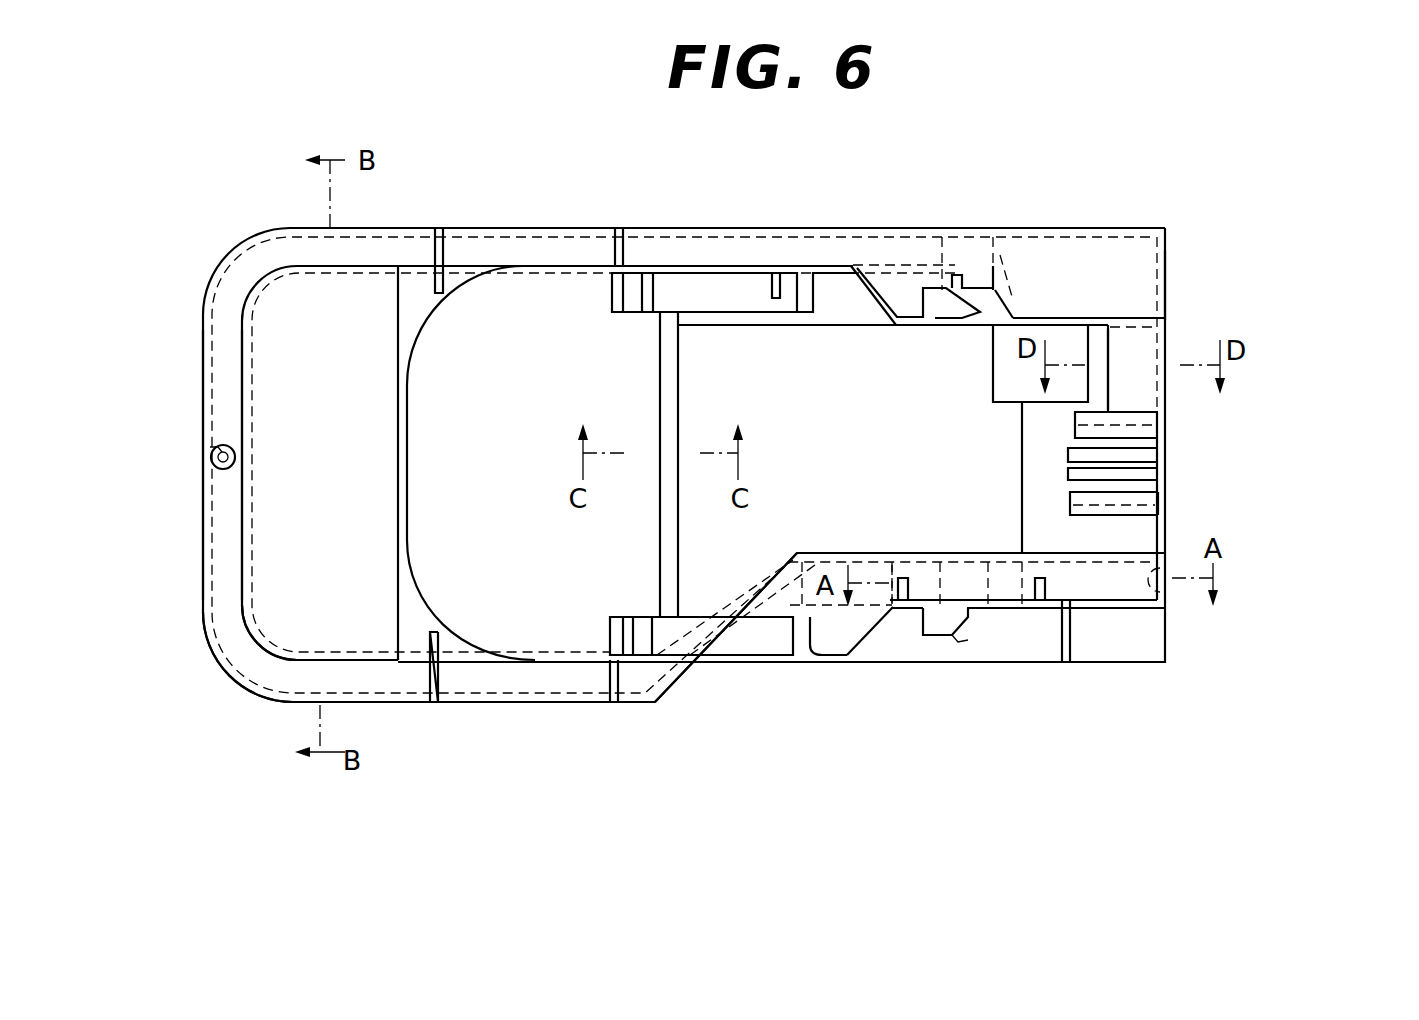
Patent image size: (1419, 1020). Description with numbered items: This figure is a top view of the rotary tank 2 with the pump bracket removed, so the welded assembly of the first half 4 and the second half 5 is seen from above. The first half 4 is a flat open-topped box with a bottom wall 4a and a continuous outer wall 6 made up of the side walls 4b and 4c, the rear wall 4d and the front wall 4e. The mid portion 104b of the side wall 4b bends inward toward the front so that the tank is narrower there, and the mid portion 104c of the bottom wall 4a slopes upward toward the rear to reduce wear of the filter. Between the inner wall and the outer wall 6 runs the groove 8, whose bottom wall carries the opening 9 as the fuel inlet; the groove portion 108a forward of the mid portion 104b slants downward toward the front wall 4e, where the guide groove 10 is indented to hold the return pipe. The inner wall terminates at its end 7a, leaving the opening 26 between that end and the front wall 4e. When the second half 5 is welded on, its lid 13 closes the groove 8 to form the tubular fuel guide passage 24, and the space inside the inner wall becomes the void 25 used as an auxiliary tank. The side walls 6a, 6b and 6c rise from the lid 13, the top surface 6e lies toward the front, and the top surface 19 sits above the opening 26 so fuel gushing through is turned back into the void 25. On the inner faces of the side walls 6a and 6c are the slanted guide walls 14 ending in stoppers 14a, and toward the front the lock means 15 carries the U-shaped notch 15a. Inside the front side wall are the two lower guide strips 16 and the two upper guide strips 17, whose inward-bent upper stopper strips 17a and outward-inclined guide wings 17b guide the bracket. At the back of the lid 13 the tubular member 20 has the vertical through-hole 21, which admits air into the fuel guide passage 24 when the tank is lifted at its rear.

The rotary tank 2 is at (526, 224).
The first half 4 is at (1122, 652).
The bottom wall 4a is at (510, 628).
The side wall 4b is at (621, 712).
The side wall 4c is at (660, 224).
The rear wall 4d is at (198, 552).
The front wall 4e is at (1168, 285).
The second half 5 is at (560, 695).
The outer wall 6 is at (770, 228).
The side wall 6a is at (538, 663).
The side wall 6b is at (275, 360).
The side wall 6c is at (588, 266).
The top surface 6e is at (420, 290).
The end of inner wall 7a is at (975, 266).
The groove 8 is at (266, 668).
The opening 9 is at (968, 622).
The guide groove 10 is at (1166, 604).
The lid 13 is at (212, 652).
The guide wall 14 is at (740, 297).
The stopper 14a is at (620, 297).
The lock means 15 is at (921, 287).
The notch 15a is at (942, 290).
The lower guide strip 16 is at (1165, 480).
The upper guide strip 17 is at (1130, 408).
The upper stopper strip 17a is at (1165, 508).
The guide wing 17b is at (1165, 430).
The top surface 19 is at (1133, 340).
The tubular member 20 is at (212, 458).
The through-hole 21 is at (215, 447).
The fuel guide passage 24 is at (262, 243).
The void 25 is at (476, 592).
The opening 26 is at (980, 281).
The mid portion of side wall 104b is at (712, 680).
The mid portion of bottom wall 104c is at (660, 552).
The groove portion 108a is at (882, 658).